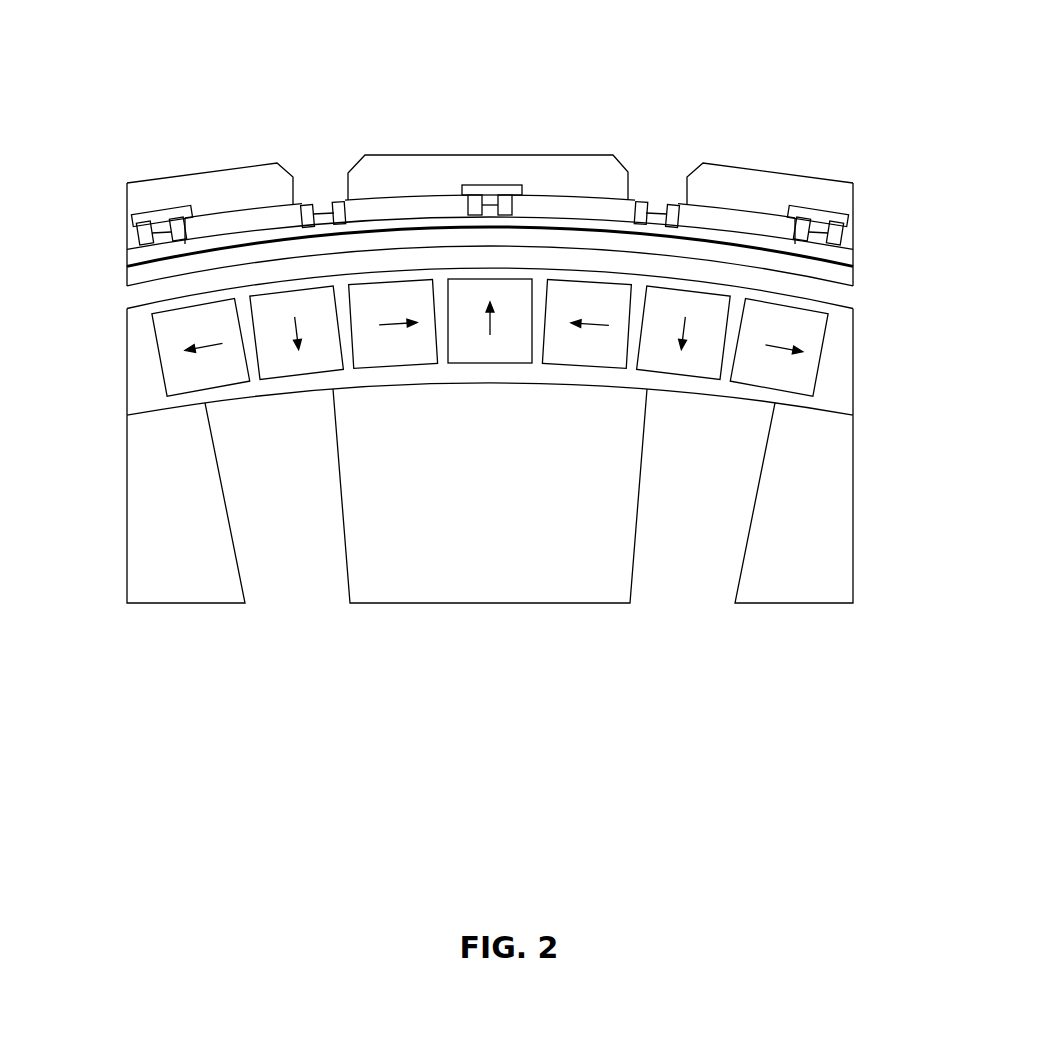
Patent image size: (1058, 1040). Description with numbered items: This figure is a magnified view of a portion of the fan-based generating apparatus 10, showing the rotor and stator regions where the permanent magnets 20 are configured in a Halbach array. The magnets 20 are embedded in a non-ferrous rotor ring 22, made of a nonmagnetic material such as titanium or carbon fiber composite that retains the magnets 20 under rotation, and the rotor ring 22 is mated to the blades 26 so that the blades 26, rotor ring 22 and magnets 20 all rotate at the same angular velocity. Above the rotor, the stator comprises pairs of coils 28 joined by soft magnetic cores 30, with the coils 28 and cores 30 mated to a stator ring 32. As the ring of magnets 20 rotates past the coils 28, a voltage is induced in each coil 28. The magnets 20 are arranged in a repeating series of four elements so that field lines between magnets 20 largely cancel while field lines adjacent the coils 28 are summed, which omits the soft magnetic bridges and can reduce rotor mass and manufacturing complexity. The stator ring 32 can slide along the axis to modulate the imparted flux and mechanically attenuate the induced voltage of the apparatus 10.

The apparatus 10 is at (504, 351).
The permanent magnets 20 is at (410, 352).
The rotor ring 22 is at (141, 368).
The blades 26 is at (484, 518).
The coils 28 is at (450, 205).
The soft magnetic cores 30 is at (424, 182).
The stator ring 32 is at (325, 212).